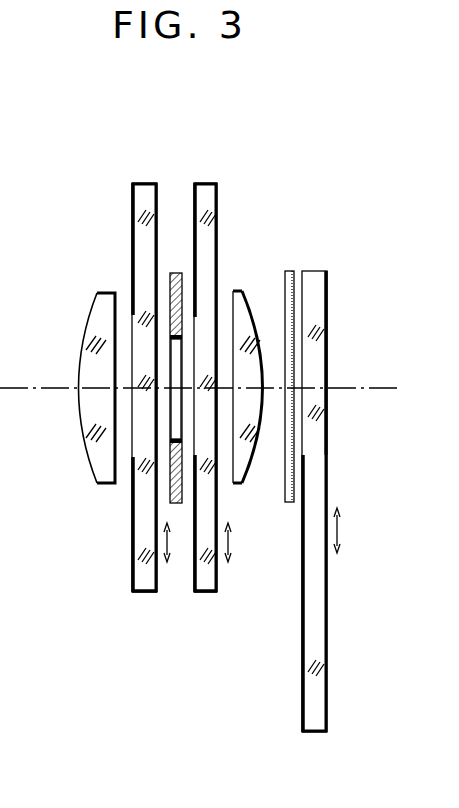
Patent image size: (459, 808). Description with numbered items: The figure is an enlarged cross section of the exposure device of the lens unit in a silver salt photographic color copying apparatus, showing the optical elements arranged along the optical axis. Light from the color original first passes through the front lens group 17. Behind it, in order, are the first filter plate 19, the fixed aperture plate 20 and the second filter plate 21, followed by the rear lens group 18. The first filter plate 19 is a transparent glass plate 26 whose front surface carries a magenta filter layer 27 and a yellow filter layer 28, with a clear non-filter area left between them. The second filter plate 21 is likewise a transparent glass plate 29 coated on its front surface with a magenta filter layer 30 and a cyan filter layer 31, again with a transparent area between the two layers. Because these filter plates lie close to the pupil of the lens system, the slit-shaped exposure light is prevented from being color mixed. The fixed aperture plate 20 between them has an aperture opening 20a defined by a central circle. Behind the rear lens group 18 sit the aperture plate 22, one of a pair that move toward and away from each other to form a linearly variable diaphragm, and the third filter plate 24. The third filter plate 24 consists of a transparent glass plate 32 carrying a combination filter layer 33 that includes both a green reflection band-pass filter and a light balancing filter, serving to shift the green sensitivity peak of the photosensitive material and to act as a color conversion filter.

The front lens group 17 is at (82, 430).
The rear lens group 18 is at (248, 467).
The first filter plate 19 is at (141, 165).
The fixed aperture plate 20 is at (173, 302).
The aperture opening 20a is at (173, 355).
The second filter plate 21 is at (204, 165).
The aperture plate 22 is at (285, 292).
The third filter plate 24 is at (312, 253).
The transparent glass plate 26 is at (148, 584).
The magenta filter layer 27 is at (131, 228).
The yellow filter layer 28 is at (131, 560).
The transparent glass plate 29 is at (213, 584).
The magenta filter layer 30 is at (194, 202).
The cyan filter layer 31 is at (194, 562).
The transparent glass plate 32 is at (320, 334).
The combination filter layer (G + LB) 33 is at (303, 644).